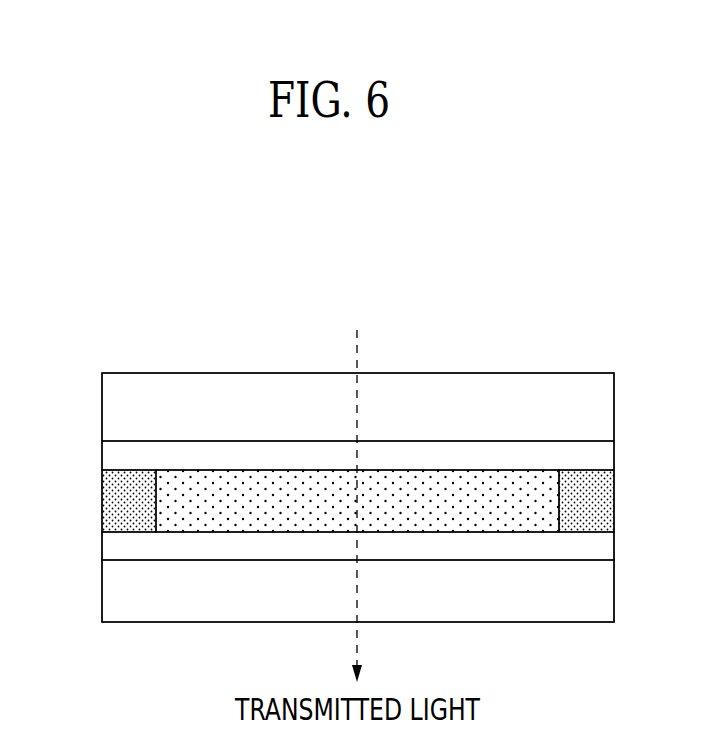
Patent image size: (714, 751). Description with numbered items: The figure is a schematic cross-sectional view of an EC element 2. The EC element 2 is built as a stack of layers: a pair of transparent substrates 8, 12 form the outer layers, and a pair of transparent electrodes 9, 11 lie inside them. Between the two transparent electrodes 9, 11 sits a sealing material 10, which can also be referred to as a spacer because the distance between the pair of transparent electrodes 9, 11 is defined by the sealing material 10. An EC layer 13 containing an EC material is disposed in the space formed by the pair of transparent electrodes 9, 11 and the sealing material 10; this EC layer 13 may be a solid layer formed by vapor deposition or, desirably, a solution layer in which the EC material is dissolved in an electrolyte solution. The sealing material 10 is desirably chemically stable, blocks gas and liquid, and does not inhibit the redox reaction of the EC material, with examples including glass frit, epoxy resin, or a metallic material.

The EC element 2 is at (75, 302).
The transparent substrate 8 is at (118, 413).
The transparent electrode 9 is at (118, 458).
The sealing material 10 is at (118, 503).
The transparent electrode 11 is at (118, 553).
The transparent substrate 12 is at (118, 593).
The EC layer 13 is at (522, 470).